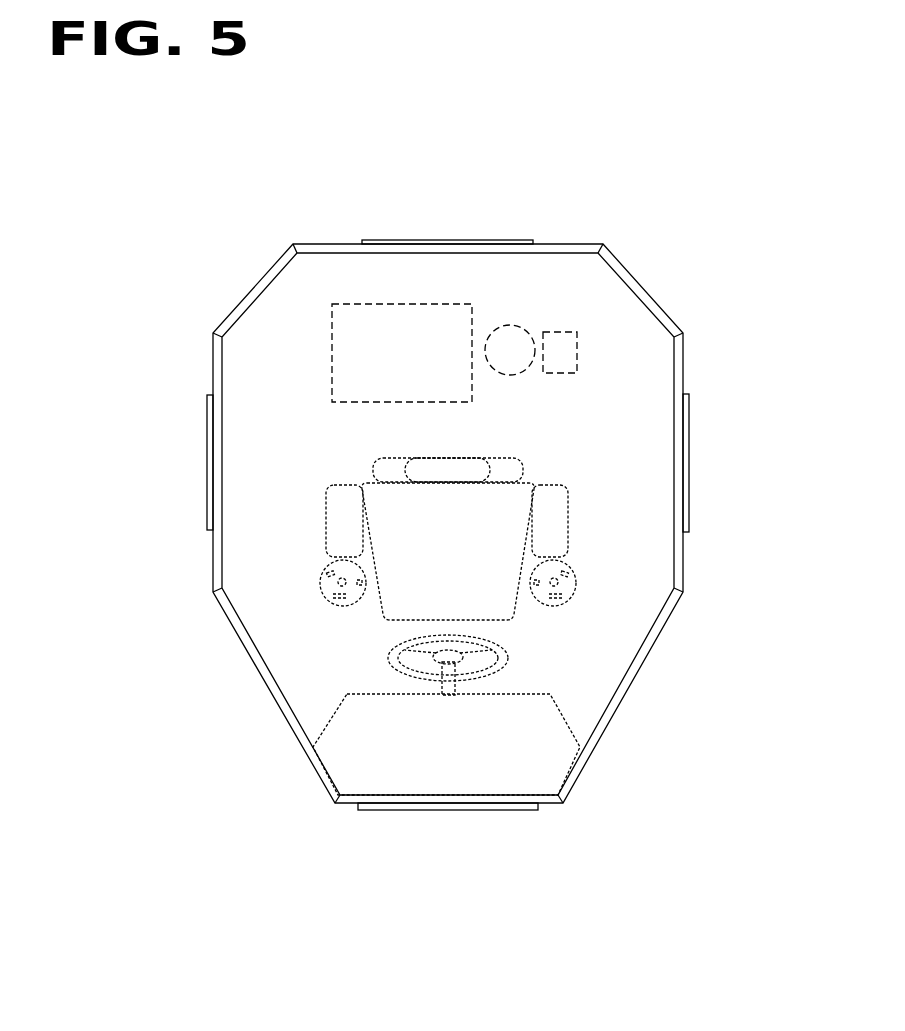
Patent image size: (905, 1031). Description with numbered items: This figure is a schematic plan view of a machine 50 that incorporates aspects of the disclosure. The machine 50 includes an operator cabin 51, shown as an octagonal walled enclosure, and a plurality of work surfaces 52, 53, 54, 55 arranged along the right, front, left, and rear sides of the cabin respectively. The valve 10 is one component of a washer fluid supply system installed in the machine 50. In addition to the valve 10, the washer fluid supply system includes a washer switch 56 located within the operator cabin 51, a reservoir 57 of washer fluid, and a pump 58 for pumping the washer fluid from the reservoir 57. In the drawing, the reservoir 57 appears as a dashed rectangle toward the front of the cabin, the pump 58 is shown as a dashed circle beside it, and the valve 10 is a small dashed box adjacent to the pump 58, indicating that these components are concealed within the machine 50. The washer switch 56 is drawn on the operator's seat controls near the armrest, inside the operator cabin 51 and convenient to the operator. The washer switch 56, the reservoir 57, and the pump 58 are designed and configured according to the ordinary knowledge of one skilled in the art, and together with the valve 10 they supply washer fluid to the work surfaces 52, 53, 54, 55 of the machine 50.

The machine 50 is at (637, 176).
The operator cabin 51 is at (651, 656).
The work surface 52 is at (683, 560).
The work surface 53 is at (322, 243).
The work surface 54 is at (213, 352).
The work surface 55 is at (548, 806).
The washer switch 56 is at (328, 576).
The reservoir 57 is at (332, 328).
The pump 58 is at (521, 329).
The valve 10 is at (578, 347).